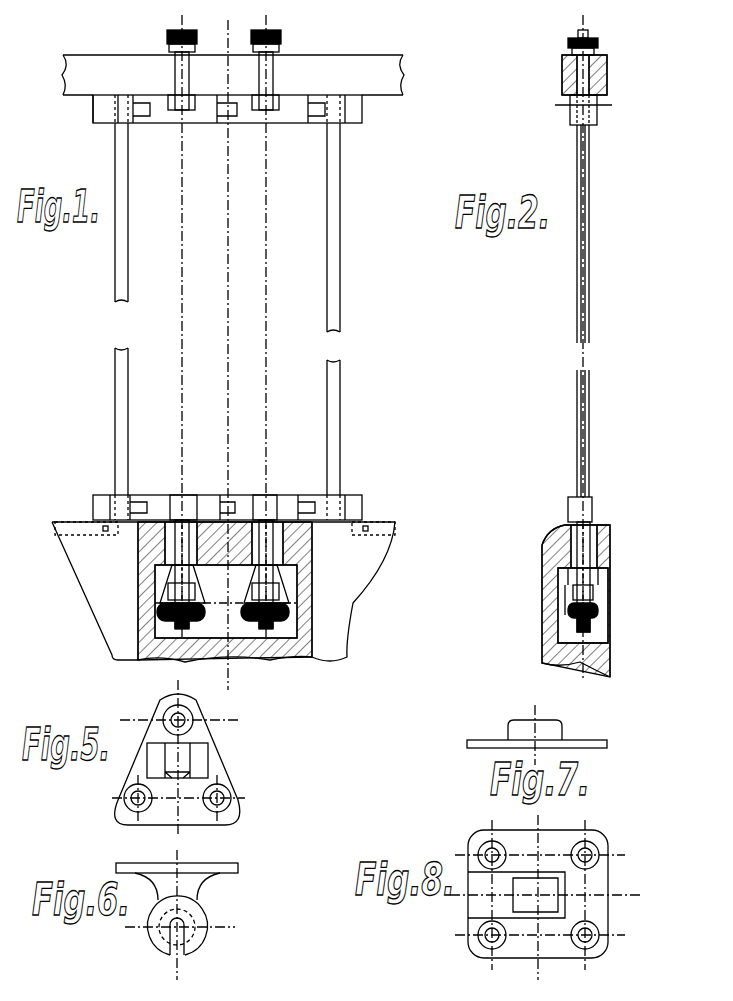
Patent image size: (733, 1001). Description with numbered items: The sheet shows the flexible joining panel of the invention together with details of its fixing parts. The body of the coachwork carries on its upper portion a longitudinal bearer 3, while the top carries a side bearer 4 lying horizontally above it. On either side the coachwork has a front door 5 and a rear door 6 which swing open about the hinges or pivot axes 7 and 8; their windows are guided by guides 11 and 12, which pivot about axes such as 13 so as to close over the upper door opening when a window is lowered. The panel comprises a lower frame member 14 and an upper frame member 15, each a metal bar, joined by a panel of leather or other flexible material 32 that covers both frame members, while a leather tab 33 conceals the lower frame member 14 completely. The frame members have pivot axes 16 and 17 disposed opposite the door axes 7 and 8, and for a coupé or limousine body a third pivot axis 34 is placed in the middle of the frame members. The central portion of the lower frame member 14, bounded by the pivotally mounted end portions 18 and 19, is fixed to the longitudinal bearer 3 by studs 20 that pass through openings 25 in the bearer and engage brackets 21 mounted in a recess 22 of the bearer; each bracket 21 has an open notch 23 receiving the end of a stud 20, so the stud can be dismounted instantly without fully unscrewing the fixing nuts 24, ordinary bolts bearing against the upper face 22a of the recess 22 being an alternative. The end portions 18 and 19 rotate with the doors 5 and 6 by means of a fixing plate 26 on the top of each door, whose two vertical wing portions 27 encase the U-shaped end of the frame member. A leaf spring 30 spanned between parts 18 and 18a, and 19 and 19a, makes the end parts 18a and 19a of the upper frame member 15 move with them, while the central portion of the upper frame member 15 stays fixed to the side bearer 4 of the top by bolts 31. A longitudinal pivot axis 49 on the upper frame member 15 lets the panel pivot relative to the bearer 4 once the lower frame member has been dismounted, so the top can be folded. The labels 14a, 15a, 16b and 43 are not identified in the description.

In FIG. 1, the longitudinal bearer 3 is at (225, 591).
In FIG. 2, the longitudinal bearer 3 is at (605, 548).
In FIG. 1, the side bearer 4 is at (385, 62).
In FIG. 2, the side bearer 4 is at (607, 75).
In FIG. 1, the front door 5 is at (95, 600).
In FIG. 1, the rear door 6 is at (348, 595).
In FIG. 1, the pivot axis 7 is at (118, 662).
In FIG. 1, the pivot axis 8 is at (322, 660).
In FIG. 1, the guide 11 is at (70, 538).
In FIG. 1, the guide 12 is at (392, 538).
In FIG. 1, the pivot axis 13 is at (106, 534).
In FIG. 1, the lower frame member 14 is at (250, 500).
In FIG. 2, the lower frame member 14 is at (592, 507).
In FIG. 1, the clamp nut 14a is at (200, 500).
In FIG. 1, the upper frame member 15 is at (265, 115).
In FIG. 2, the upper frame member 15 is at (597, 115).
In FIG. 1, the slot 15a is at (225, 118).
In FIG. 1, the pivot axis 16 is at (143, 123).
In FIG. 1, the slot 16b is at (140, 495).
In FIG. 1, the pivot axis 17 is at (313, 120).
In FIG. 1, the end portion 18 is at (100, 495).
In FIG. 1, the end part 18a is at (100, 108).
In FIG. 1, the end portion 19 is at (355, 505).
In FIG. 1, the end part 19a is at (350, 118).
In FIG. 1, the stud 20 is at (226, 497).
In FIG. 2, the stud 20 is at (578, 540).
In FIG. 1, the bracket 21 is at (224, 584).
In FIG. 2, the bracket 21 is at (573, 593).
In FIG. 5, the bracket 21 is at (215, 772).
In FIG. 6, the bracket 21 is at (198, 886).
In FIG. 1, the recess 22 is at (212, 626).
In FIG. 2, the recess 22 is at (565, 630).
In FIG. 2, the upper face of recess 22a is at (598, 570).
In FIG. 5, the open notch 23 is at (177, 757).
In FIG. 6, the open notch 23 is at (182, 948).
In FIG. 1, the fixing nut 24 is at (290, 611).
In FIG. 2, the fixing nut 24 is at (592, 622).
In FIG. 1, the opening 25 is at (150, 578).
In FIG. 2, the opening 25 is at (590, 550).
In FIG. 1, the fixing plate 26 is at (85, 520).
In FIG. 7, the fixing plate 26 is at (590, 745).
In FIG. 8, the fixing plate 26 is at (605, 905).
In FIG. 7, the vertical wing portion 27 is at (518, 730).
In FIG. 8, the vertical wing portion 27 is at (530, 870).
In FIG. 1, the leaf spring 30 is at (115, 413).
In FIG. 1, the bolt 31 is at (192, 46).
In FIG. 2, the bolt 31 is at (590, 33).
In FIG. 1, the flexible panel 32 is at (340, 210).
In FIG. 2, the flexible panel 32 is at (577, 410).
In FIG. 2, the leather tab 33 is at (572, 525).
In FIG. 1, the third pivot axis 34 is at (246, 497).
In FIG. 1, the fastening 43 is at (95, 562).
In FIG. 2, the longitudinal pivot axis 49 is at (570, 110).